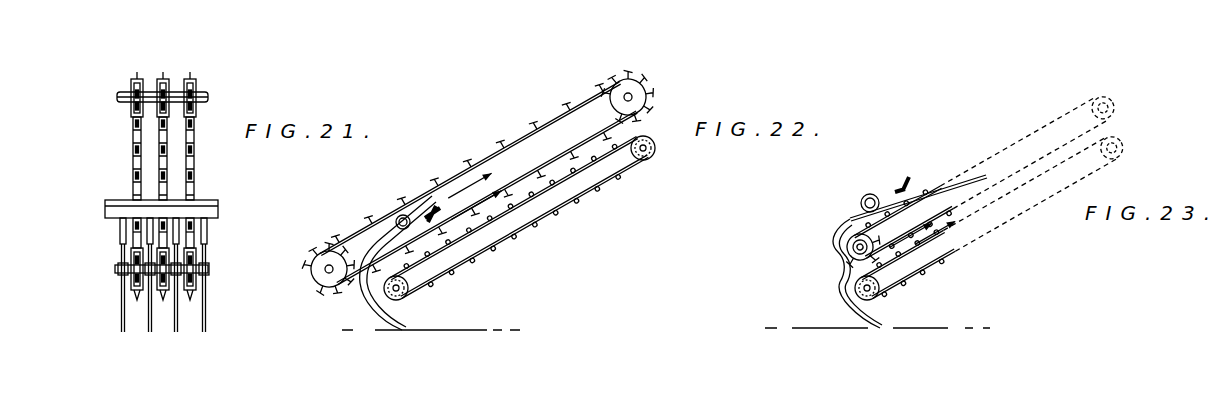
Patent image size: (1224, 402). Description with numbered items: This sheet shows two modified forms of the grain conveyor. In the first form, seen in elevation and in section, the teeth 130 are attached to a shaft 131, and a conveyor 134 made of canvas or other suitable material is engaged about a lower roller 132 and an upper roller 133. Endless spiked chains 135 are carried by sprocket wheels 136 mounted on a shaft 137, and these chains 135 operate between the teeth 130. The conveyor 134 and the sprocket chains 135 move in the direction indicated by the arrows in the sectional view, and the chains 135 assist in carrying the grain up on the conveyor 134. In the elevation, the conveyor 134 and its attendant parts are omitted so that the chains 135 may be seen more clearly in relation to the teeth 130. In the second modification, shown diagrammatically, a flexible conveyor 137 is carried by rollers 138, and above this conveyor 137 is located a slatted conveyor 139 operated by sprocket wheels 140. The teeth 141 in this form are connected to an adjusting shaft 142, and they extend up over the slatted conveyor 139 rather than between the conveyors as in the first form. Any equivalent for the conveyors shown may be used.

In FIG. 21, the teeth 130 is at (203, 320).
In FIG. 22, the teeth 130 is at (374, 332).
In FIG. 21, the shaft 131 is at (211, 212).
In FIG. 22, the shaft 131 is at (436, 210).
In FIG. 22, the lower roller 132 is at (412, 290).
In FIG. 22, the upper roller 133 is at (646, 162).
In FIG. 22, the conveyor 134 is at (548, 218).
In FIG. 21, the endless spiked chains 135 is at (196, 129).
In FIG. 22, the endless spiked chains 135 is at (572, 106).
In FIG. 21, the sprocket wheels 136 is at (194, 81).
In FIG. 22, the sprocket wheels 136 is at (630, 80).
In FIG. 21, the shaft / flexible conveyor 137 is at (209, 98).
In FIG. 22, the shaft / flexible conveyor 137 is at (633, 97).
In FIG. 23, the shaft / flexible conveyor 137 is at (926, 268).
In FIG. 23, the rollers 138 is at (868, 300).
In FIG. 23, the slatted conveyor 139 is at (925, 194).
In FIG. 23, the sprocket wheels 140 is at (858, 244).
In FIG. 23, the teeth 141 is at (842, 298).
In FIG. 23, the adjusting shaft 142 is at (918, 188).